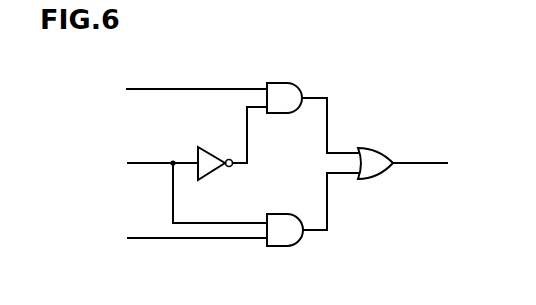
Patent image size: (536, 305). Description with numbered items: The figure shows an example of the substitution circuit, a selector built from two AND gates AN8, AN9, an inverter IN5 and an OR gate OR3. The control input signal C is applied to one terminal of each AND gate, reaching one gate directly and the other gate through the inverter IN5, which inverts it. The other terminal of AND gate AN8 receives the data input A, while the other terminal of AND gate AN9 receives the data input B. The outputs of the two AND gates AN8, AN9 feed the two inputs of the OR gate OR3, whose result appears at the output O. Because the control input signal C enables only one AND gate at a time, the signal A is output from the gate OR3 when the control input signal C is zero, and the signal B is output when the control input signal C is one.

The AND gate AN8 is at (283, 92).
The AND gate AN9 is at (288, 223).
The OR gate OR3 is at (377, 157).
The inverter IN5 is at (205, 153).
The data input A is at (184, 93).
The data input B is at (184, 238).
The control input signal C is at (184, 187).
The output O is at (430, 163).